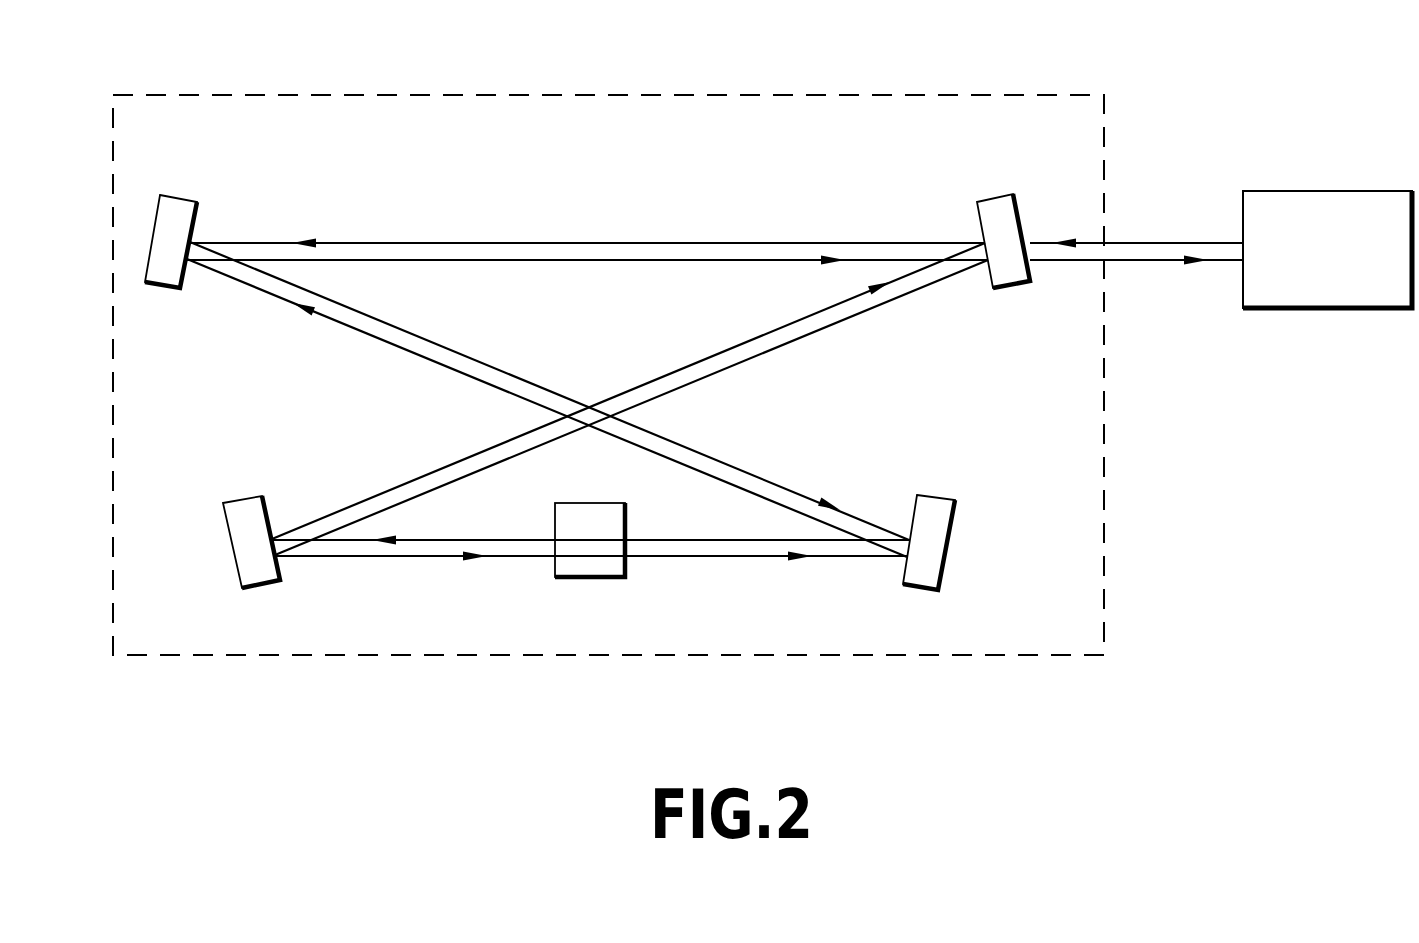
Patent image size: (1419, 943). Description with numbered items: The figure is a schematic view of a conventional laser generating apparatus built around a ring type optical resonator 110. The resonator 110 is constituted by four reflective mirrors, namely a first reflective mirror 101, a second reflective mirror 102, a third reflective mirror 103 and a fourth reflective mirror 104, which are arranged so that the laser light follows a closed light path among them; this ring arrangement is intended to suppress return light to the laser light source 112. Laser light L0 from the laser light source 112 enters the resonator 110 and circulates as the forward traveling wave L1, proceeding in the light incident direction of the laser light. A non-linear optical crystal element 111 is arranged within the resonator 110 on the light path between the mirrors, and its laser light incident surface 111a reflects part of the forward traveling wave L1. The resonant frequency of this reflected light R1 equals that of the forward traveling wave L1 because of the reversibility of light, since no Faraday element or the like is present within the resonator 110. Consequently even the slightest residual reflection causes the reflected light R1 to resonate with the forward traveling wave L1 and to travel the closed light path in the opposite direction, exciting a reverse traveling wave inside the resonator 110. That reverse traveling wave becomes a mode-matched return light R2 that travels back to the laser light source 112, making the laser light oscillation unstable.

The first reflective mirror 101 is at (998, 208).
The second reflective mirror 102 is at (180, 203).
The third reflective mirror 103 is at (935, 507).
The fourth reflective mirror 104 is at (243, 510).
The optical resonator 110 is at (797, 95).
The non-linear optical crystal element 111 is at (573, 568).
The surface of optical element 111a is at (627, 567).
The laser light source 112 is at (1338, 195).
The incident laser beam L0 is at (1147, 243).
The forward traveling wave L1 is at (645, 242).
The reflected light R1 is at (765, 558).
The return light R2 is at (1145, 262).